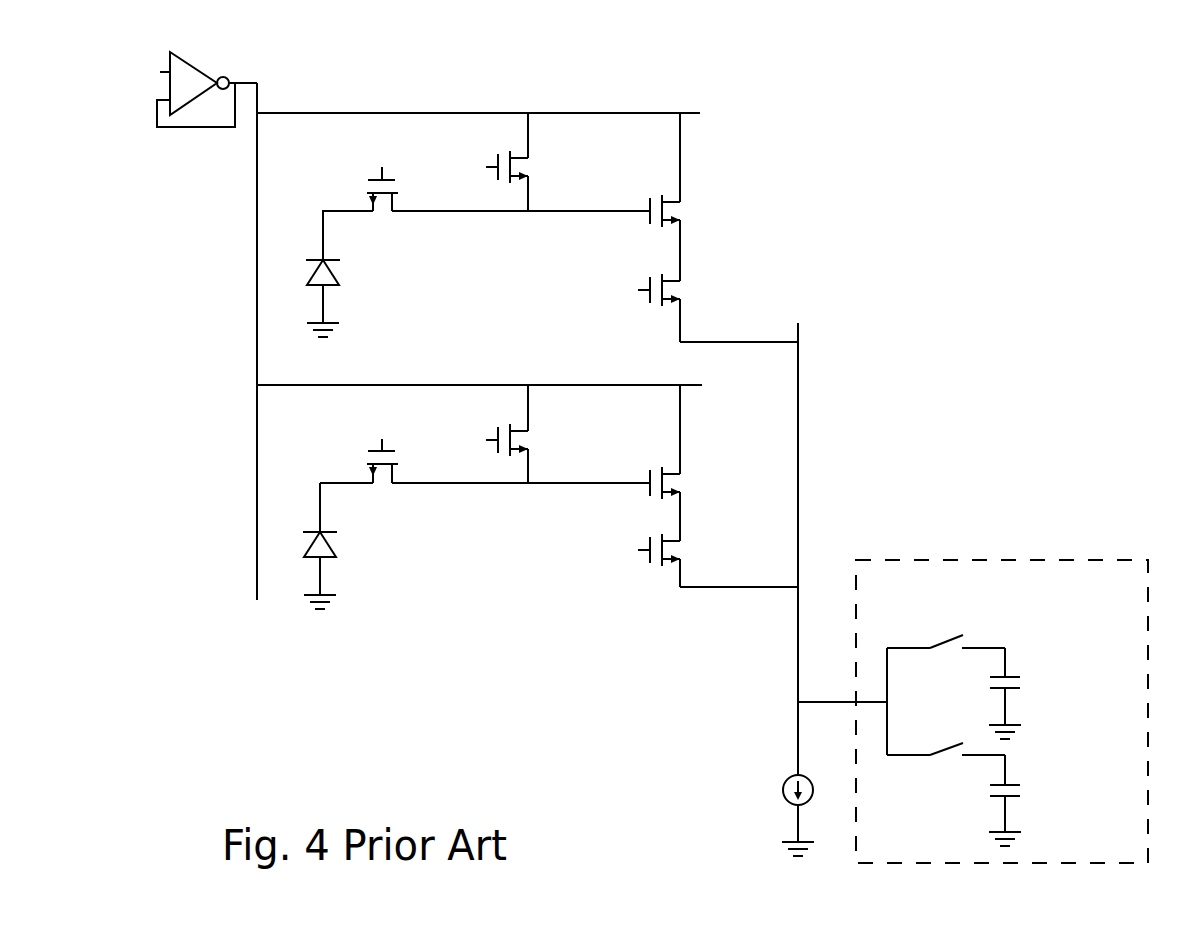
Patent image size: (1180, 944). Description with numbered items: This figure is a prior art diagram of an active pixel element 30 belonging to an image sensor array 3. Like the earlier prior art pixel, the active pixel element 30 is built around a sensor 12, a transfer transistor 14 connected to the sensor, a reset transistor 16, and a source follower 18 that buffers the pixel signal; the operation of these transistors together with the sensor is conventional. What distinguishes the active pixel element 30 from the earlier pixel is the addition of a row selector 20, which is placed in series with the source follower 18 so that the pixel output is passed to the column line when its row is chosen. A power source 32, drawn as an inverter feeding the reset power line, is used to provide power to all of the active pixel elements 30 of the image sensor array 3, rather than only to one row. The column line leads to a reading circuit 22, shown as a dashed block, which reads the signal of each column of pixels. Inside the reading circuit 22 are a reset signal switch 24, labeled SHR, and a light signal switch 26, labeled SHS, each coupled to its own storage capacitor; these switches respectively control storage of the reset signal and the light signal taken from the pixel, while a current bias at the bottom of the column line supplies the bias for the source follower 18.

The image sensor array 3 is at (1038, 104).
The sensor 12 is at (308, 273).
The transfer transistor 14 is at (363, 190).
The reset transistor 16 is at (503, 151).
The source follower 18 is at (649, 223).
The row selector 20 is at (646, 300).
The reading circuit 22 is at (1068, 558).
The reset signal switch (SHR) 24 is at (968, 635).
The light signal switch (SHS) 26 is at (943, 761).
The active pixel element 30 is at (823, 103).
The power source 32 is at (170, 53).